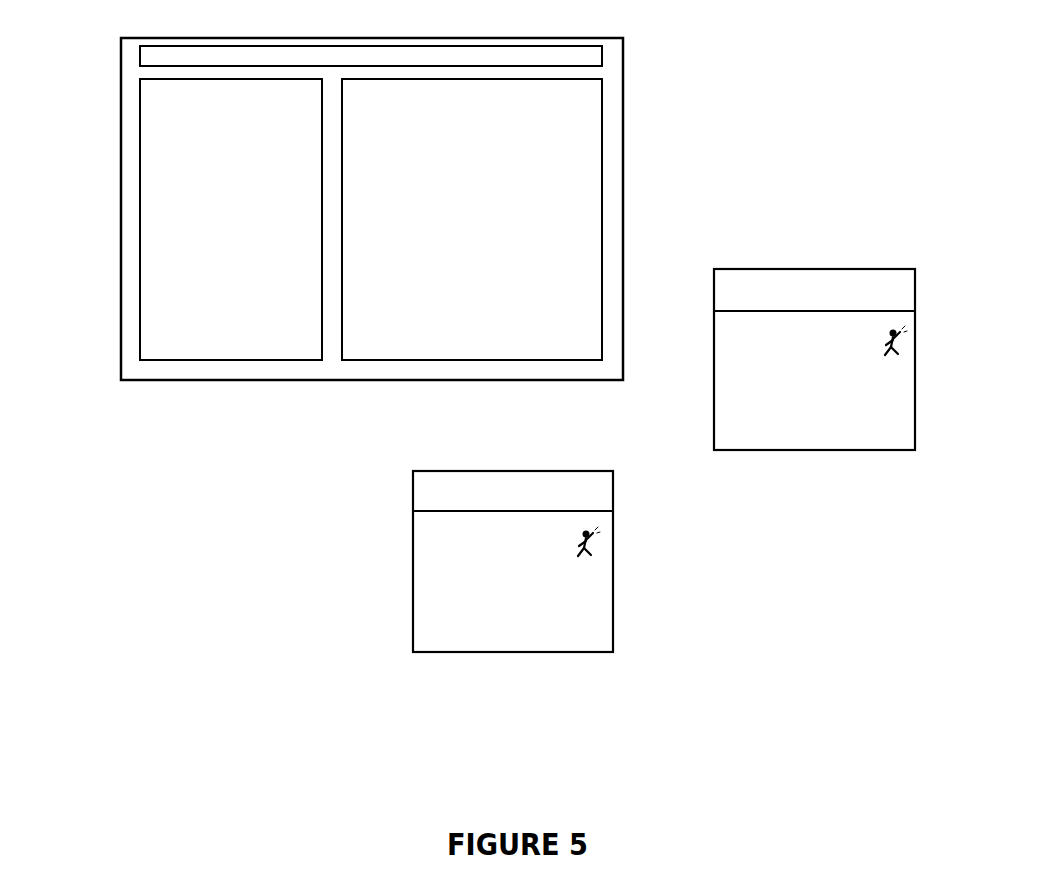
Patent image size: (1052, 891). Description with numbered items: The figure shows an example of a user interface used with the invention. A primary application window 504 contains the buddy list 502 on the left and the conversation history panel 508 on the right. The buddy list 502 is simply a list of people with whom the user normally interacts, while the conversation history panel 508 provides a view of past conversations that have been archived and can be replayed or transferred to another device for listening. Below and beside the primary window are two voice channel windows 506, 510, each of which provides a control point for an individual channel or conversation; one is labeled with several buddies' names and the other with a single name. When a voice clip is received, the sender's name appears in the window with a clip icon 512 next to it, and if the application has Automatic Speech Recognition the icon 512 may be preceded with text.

The buddy list 502 is at (160, 138).
The user interface window 504 is at (208, 392).
The voice channel window 506 is at (496, 468).
The conversation history panel 508 is at (573, 168).
The voice channel window 510 is at (797, 267).
The clip icon 512 is at (600, 569).